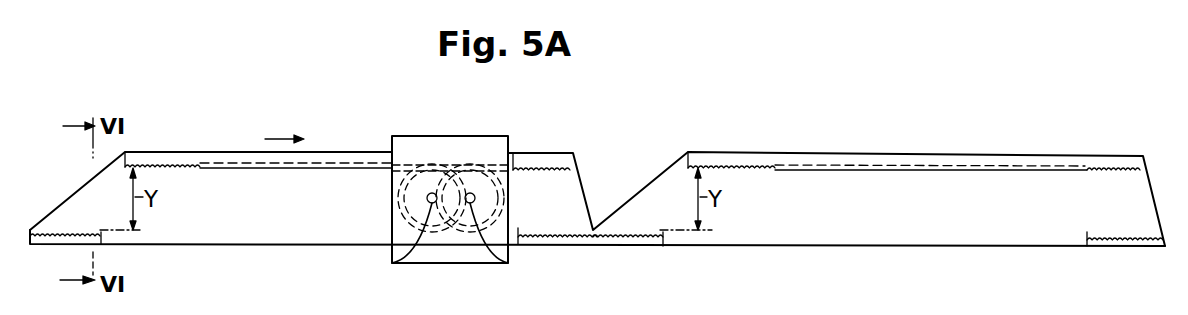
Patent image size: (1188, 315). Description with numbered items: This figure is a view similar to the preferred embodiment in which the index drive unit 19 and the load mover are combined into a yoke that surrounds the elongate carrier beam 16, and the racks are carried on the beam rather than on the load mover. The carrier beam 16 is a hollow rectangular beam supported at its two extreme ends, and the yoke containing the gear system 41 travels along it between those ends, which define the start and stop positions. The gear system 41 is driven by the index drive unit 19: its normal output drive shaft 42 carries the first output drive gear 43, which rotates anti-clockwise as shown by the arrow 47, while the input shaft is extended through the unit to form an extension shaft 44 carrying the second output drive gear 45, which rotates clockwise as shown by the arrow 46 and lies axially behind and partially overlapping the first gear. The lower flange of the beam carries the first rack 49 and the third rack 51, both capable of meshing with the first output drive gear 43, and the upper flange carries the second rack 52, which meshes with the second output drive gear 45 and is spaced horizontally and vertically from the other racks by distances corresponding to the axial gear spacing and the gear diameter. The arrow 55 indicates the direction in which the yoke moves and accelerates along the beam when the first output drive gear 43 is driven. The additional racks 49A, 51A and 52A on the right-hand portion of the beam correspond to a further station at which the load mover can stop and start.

The carrier beam 16 is at (597, 217).
The index drive unit 19 is at (481, 220).
The gear system 41 is at (461, 249).
The output drive shaft 42 is at (395, 244).
The first output drive gear 43 is at (411, 200).
The extension shaft 44 is at (509, 244).
The second output drive gear 45 is at (495, 199).
The arrow indicating clockwise rotation 46 is at (492, 198).
The arrow indicating anti-clockwise rotation 47 is at (414, 198).
The first rack 49 is at (557, 261).
The lower right serrated surface 49A is at (1131, 265).
The third rack 51 is at (59, 258).
The lower middle serrated surface 51A is at (630, 262).
The second rack 52 is at (258, 145).
The upper right serrated surface 52A is at (914, 145).
The arrow indicating direction of movement 55 is at (277, 126).